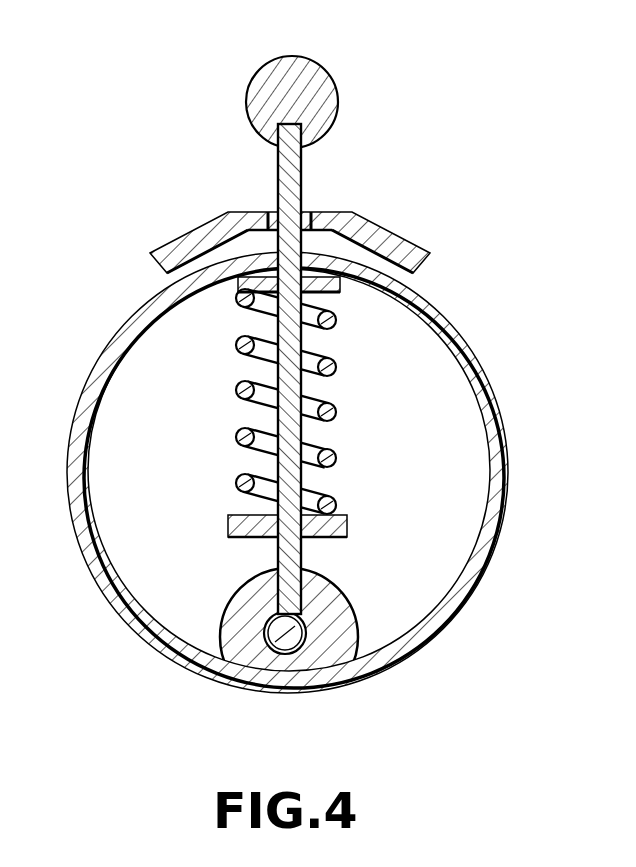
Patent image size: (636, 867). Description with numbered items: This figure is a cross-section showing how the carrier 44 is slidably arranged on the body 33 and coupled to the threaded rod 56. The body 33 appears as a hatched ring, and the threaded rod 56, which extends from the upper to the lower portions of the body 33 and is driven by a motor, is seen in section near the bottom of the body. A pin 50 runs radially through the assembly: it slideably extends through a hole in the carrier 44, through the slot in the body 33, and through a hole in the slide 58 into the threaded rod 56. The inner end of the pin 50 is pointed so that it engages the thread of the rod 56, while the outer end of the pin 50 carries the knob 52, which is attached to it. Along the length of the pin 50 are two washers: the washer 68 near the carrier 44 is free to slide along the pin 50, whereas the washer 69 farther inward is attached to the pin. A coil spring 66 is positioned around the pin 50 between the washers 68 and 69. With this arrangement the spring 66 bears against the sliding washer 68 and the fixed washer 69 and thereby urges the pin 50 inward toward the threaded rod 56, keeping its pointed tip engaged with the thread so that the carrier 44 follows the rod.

The body 33 is at (536, 425).
The carrier 44 is at (413, 204).
The pin 50 is at (284, 397).
The knob 52 is at (363, 72).
The threaded rod 56 is at (264, 643).
The slide 58 is at (212, 580).
The coil spring 66 is at (215, 409).
The washer 68 is at (370, 287).
The washer 69 is at (371, 511).